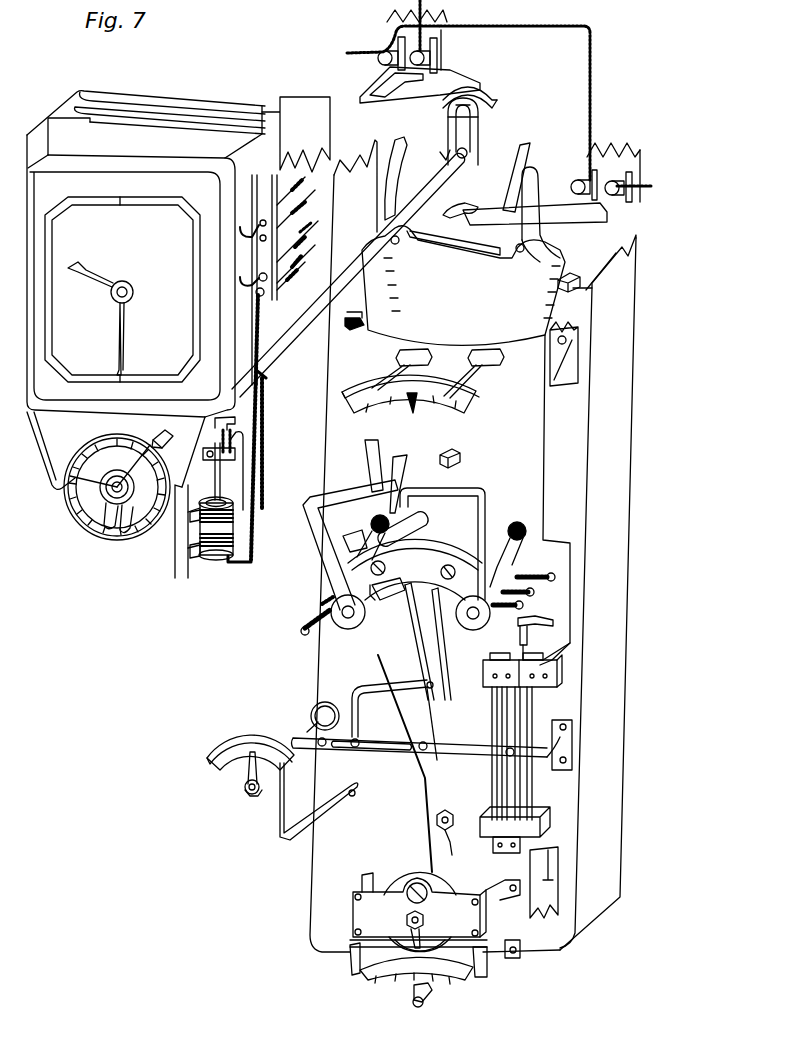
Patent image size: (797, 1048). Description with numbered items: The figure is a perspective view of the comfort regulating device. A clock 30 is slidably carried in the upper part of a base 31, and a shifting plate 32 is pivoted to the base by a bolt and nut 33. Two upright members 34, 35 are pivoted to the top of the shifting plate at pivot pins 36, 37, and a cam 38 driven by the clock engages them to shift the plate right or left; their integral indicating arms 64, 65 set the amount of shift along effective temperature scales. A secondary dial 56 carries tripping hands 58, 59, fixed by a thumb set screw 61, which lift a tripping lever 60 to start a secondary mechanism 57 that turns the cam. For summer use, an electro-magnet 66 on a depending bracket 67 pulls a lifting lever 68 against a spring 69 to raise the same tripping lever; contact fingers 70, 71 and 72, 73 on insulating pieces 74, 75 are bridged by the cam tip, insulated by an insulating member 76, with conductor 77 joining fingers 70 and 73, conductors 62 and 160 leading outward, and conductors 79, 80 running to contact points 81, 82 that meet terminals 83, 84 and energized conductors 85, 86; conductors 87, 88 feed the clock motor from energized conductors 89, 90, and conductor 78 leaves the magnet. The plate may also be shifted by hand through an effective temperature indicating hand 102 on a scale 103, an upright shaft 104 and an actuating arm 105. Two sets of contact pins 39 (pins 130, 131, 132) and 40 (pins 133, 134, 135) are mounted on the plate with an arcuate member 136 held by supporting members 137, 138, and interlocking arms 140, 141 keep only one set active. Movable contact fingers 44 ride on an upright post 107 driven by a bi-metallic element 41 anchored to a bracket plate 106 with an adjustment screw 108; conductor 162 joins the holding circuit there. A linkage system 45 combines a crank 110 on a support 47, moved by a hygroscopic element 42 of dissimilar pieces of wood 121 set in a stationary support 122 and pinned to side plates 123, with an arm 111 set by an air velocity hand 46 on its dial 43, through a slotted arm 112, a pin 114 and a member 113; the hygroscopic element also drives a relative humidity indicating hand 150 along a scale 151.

The clock 30 is at (135, 255).
The base 31 is at (292, 115).
The shifting plate 32 is at (514, 446).
The bolt and nut 33 is at (458, 835).
The upright member 34 is at (407, 148).
The upright member 35 is at (528, 158).
The pivot pin 36 is at (396, 246).
The pivot pin 37 is at (520, 253).
The cam 38 is at (480, 132).
The set of contact pins 39 is at (382, 640).
The set of contact pins 40 is at (489, 652).
The bi-metallic element 41 is at (455, 890).
The hygroscopic element 42 is at (569, 708).
The air velocity dial 43 is at (262, 721).
The movable contact fingers 44 is at (411, 667).
The linkage system 45 is at (389, 776).
The air velocity hand 46 is at (245, 787).
The support 47 is at (574, 742).
The secondary dial 56 is at (100, 518).
The secondary mechanism 57 is at (195, 437).
The tripping hand 58 is at (109, 532).
The tripping hand 59 is at (130, 534).
The tripping lever 60 is at (156, 437).
The thumb set screw 61 is at (135, 492).
The conductor 62 is at (640, 190).
The indicating arm 64 is at (350, 326).
The indicating arm 65 is at (578, 276).
The electro-magnet 66 is at (214, 560).
The depending bracket 67 is at (178, 578).
The lifting lever 68 is at (212, 462).
The spring 69 is at (230, 471).
The contact finger 70 is at (466, 205).
The contact finger 71 is at (470, 220).
The contact finger 72 is at (486, 86).
The contact finger 73 is at (432, 97).
The insulating piece 74 is at (443, 44).
The insulating piece 75 is at (636, 165).
The insulating member 76 is at (480, 104).
The conductor 77 is at (593, 102).
The conductor 78 is at (243, 510).
The conductor 79 is at (342, 40).
The conductor 80 is at (262, 440).
The contact point 81 is at (268, 277).
The contact point 82 is at (265, 293).
The terminal 83 is at (297, 241).
The terminal 84 is at (298, 262).
The energized conductor 85 is at (314, 225).
The energized conductor 86 is at (305, 253).
The conductor 87 is at (247, 225).
The conductor 88 is at (246, 277).
The energized conductor 89 is at (300, 197).
The energized conductor 90 is at (303, 210).
The effective temperature indicating hand 102 is at (436, 1000).
The effective temperature scale 103 is at (388, 992).
The upright shaft 104 is at (560, 386).
The actuating arm 105 is at (564, 332).
The bracket plate 106 is at (383, 920).
The upright post 107 is at (430, 782).
The adjustment screw 108 is at (427, 900).
The crank 110 is at (452, 748).
The arm 111 is at (322, 748).
The slotted arm 112 is at (372, 740).
The member 113 is at (365, 685).
The pin 114 is at (355, 750).
The dissimilar pieces of wood 121 is at (540, 788).
The stationary support 122 is at (545, 822).
The side plates 123 is at (498, 653).
The contact pin 130 is at (300, 634).
The contact pin 131 is at (303, 622).
The contact pin 132 is at (320, 603).
The contact pin 133 is at (524, 607).
The contact pin 134 is at (535, 593).
The contact pin 135 is at (540, 572).
The arcuate member 136 is at (425, 567).
The supporting member 137 is at (425, 536).
The supporting member 138 is at (458, 545).
The interlocking arm 140 is at (485, 500).
The interlocking arm 141 is at (352, 488).
The relative humidity indicating hand 150 is at (414, 413).
The relative humidity scale 151 is at (393, 402).
The conductor 160 is at (428, 20).
The conductor 162 is at (424, 940).